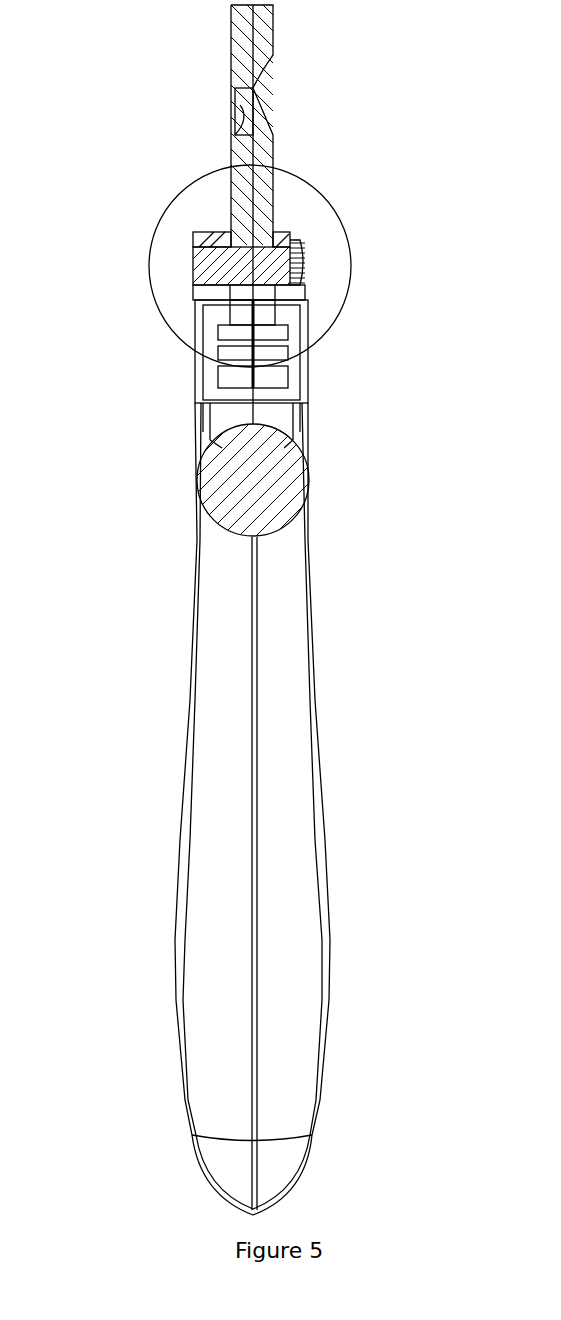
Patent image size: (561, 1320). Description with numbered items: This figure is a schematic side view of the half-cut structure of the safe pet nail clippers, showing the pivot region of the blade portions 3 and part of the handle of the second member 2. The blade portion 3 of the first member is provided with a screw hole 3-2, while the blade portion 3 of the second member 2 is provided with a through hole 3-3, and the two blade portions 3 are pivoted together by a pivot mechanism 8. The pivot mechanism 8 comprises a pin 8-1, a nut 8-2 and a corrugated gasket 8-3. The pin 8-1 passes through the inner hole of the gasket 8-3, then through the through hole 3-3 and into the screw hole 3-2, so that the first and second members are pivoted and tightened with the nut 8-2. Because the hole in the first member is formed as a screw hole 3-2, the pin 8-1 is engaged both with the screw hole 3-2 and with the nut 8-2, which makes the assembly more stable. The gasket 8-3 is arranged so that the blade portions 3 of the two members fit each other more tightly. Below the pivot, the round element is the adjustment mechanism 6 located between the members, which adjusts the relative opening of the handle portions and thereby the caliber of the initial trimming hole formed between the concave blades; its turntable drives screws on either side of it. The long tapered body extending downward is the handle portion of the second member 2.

The second member 2 is at (288, 770).
The blade portion 3 is at (262, 138).
The screw hole 3-2 is at (187, 338).
The through hole 3-3 is at (275, 290).
The adjustment mechanism 6 is at (277, 490).
The pivot mechanism 8 is at (277, 260).
The pin 8-1 is at (297, 262).
The nut 8-2 is at (184, 201).
The corrugated gasket 8-3 is at (287, 226).